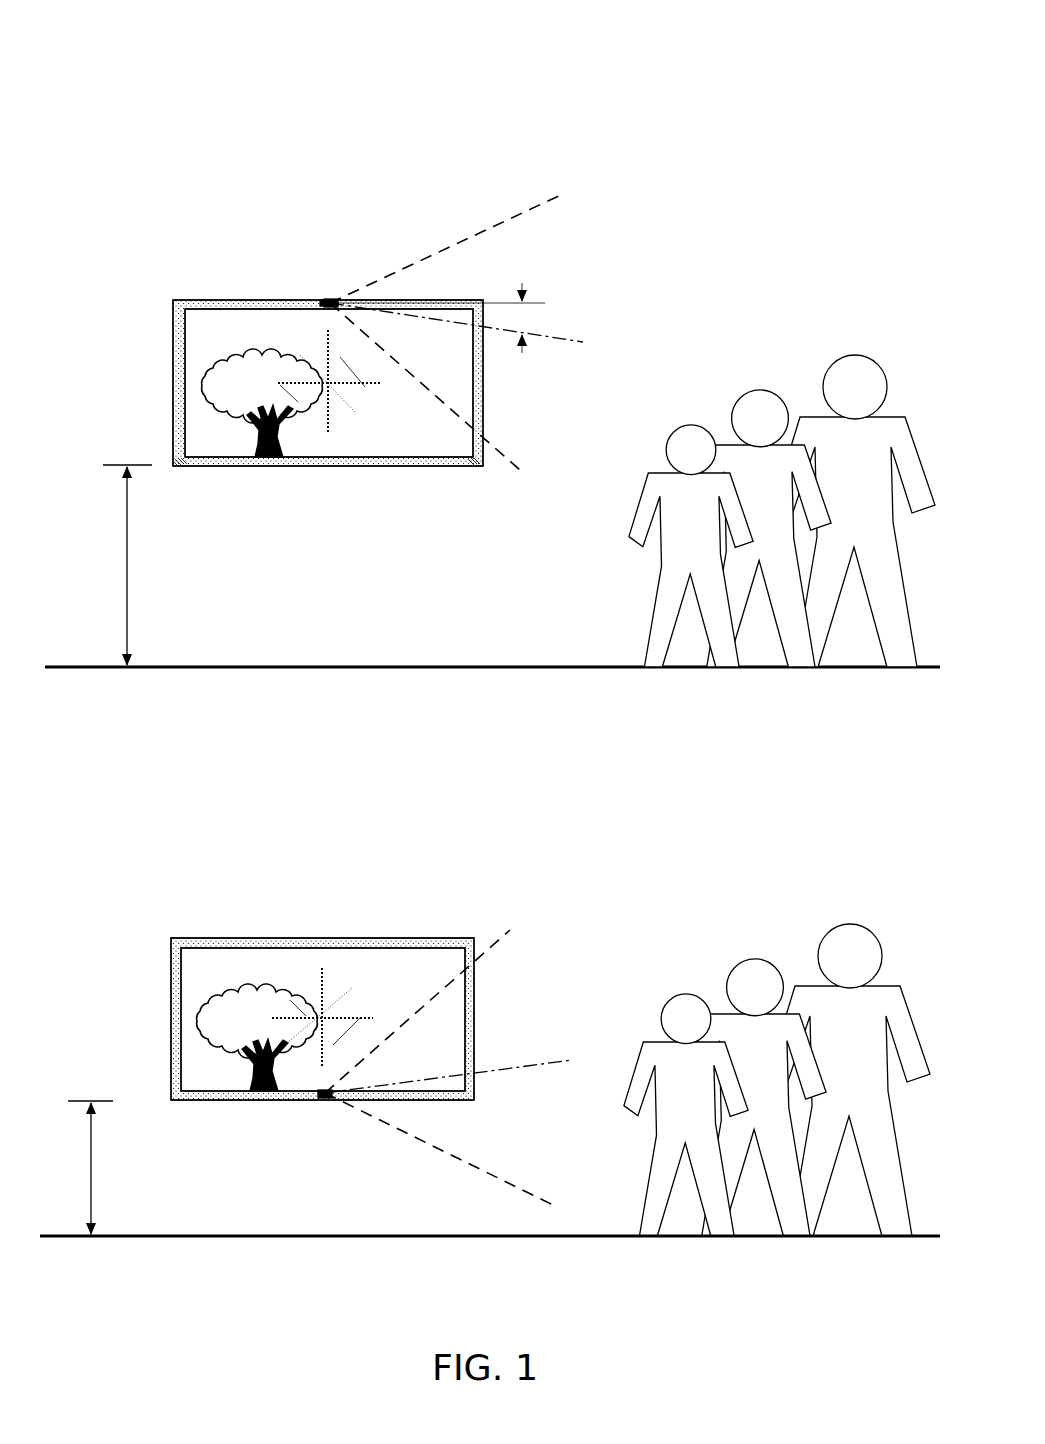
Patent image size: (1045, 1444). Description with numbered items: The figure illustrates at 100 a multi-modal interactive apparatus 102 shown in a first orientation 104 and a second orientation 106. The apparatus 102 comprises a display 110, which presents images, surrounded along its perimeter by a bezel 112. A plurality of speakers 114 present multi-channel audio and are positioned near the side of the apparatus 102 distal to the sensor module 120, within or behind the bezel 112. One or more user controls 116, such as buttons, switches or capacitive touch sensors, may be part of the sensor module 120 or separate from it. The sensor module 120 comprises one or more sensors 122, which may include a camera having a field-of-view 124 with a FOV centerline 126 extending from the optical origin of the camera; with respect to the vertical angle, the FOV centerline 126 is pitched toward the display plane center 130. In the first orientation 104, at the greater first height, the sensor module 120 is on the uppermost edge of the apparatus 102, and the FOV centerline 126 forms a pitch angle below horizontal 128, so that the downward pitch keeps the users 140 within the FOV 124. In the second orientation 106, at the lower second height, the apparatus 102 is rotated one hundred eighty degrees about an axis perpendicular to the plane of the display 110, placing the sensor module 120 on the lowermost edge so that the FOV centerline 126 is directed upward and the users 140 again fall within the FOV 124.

The illustration of multi-modal interactive apparatus in two orientations 100 is at (826, 40).
The multi-modal interactive apparatus 102 is at (225, 296).
The first orientation 104 is at (275, 58).
The second orientation 106 is at (282, 856).
The display device 110 is at (340, 441).
The bezel 112 is at (352, 458).
The speakers 114 is at (190, 458).
The user controls 116 is at (325, 300).
The sensor module 120 is at (272, 1147).
The sensors 122 is at (330, 303).
The field-of-view 124 is at (517, 317).
The FOV centerline 126 is at (532, 341).
The horizontal 128 is at (520, 318).
The display plane center 130 is at (333, 388).
The users 140 is at (779, 778).